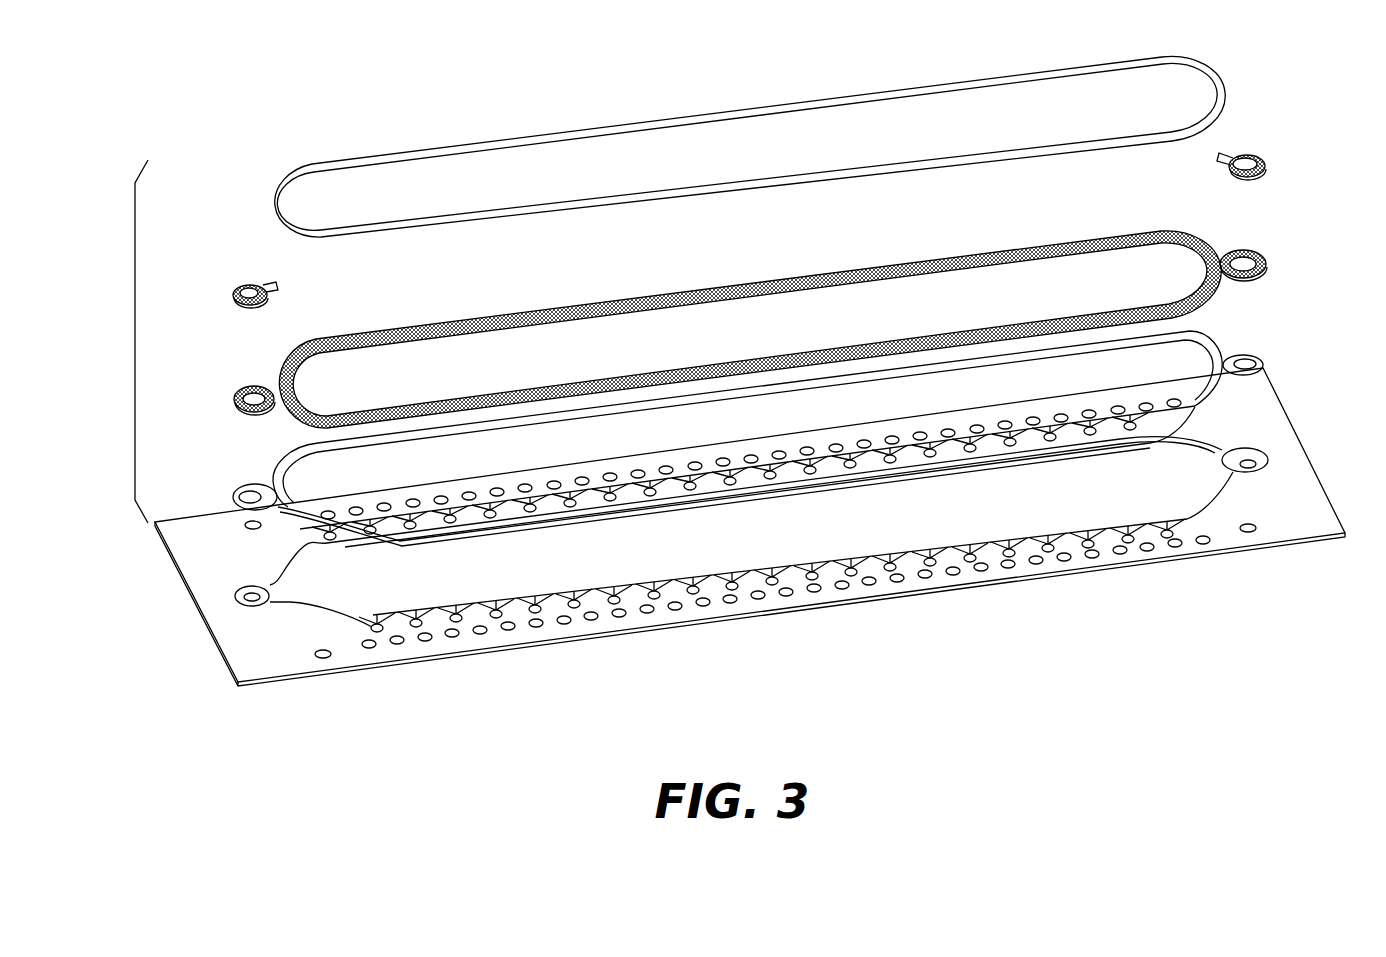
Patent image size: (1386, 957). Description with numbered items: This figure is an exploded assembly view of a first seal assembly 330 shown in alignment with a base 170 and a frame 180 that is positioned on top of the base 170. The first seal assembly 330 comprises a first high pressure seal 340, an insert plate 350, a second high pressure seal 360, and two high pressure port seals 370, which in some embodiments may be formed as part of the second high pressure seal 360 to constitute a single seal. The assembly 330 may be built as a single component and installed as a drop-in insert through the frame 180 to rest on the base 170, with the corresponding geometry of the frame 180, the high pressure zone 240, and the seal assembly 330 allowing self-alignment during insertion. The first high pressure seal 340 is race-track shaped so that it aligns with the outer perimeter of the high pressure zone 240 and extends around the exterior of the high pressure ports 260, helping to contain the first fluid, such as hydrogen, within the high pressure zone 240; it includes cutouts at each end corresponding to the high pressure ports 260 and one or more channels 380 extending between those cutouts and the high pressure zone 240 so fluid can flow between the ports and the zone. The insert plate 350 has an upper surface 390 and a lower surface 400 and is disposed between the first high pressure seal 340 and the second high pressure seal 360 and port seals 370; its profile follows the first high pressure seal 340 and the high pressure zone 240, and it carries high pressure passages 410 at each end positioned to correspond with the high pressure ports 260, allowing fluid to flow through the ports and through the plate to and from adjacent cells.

The base 170 is at (757, 509).
The frame 180 is at (1310, 440).
The high pressure zone 240 is at (1135, 498).
The high pressure ports 260 is at (1257, 452).
The first seal assembly 330 is at (134, 328).
The first high pressure seal 340 is at (1228, 343).
The insert plate 350 is at (1230, 223).
The second high pressure seal 360 is at (1214, 68).
The high pressure port seals 370 is at (254, 274).
The channels 380 is at (233, 497).
The upper surface 390 is at (1130, 230).
The lower surface 400 is at (267, 422).
The high pressure passages 410 is at (238, 393).